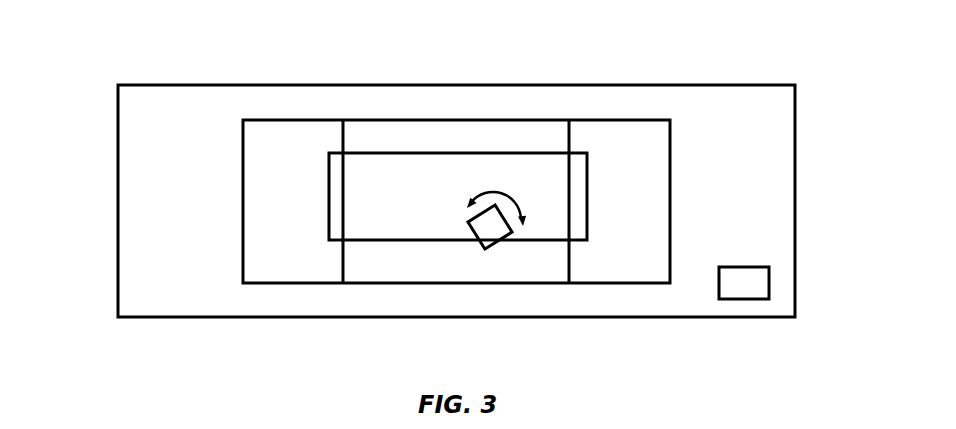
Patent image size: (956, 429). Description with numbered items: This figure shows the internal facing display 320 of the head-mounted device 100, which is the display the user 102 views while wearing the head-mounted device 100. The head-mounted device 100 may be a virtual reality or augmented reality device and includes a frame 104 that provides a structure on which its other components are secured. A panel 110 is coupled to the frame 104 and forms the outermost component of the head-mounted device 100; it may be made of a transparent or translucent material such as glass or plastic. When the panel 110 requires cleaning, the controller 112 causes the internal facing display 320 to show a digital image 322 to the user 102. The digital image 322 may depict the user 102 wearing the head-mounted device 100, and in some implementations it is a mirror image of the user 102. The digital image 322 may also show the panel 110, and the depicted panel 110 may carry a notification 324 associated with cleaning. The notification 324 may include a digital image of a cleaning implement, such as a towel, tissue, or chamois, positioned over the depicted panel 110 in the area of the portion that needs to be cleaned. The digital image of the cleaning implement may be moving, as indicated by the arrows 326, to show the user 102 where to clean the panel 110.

The head-mounted device 100 is at (86, 81).
The user 102 is at (570, 263).
The frame 104 is at (118, 181).
The panel 110 is at (588, 197).
The controller 112 is at (770, 279).
The internal facing display 320 is at (645, 118).
The digital image 322 is at (290, 142).
The notification 324 is at (478, 240).
The arrows 326 is at (497, 190).